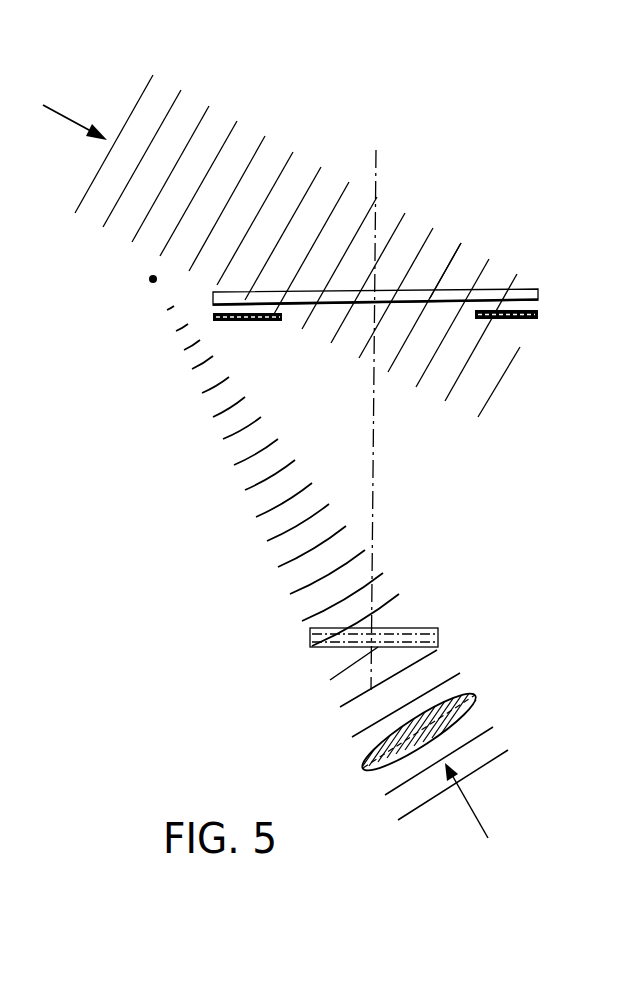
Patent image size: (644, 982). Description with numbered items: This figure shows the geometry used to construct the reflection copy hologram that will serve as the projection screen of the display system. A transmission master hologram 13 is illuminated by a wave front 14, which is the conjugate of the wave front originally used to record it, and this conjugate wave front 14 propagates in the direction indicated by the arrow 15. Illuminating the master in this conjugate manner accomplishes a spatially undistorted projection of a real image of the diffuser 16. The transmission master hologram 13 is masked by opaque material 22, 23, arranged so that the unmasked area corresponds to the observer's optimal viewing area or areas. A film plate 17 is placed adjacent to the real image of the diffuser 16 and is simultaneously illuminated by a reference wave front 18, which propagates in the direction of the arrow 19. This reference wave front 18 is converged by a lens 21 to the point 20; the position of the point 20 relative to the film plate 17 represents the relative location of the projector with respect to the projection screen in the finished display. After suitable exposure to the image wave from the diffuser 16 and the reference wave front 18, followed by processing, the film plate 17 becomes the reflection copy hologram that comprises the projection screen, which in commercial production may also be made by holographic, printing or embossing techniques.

The transmission master hologram 13 is at (500, 288).
The wave front 14 is at (462, 245).
The arrow 15 is at (72, 118).
The diffuser 16 is at (332, 656).
The film plate 17 is at (438, 633).
The reference wave front 18 is at (398, 600).
The arrow 19 is at (480, 820).
The point 20 is at (151, 284).
The lens 21 is at (475, 710).
The opaque material 22 is at (247, 322).
The opaque material 23 is at (520, 318).